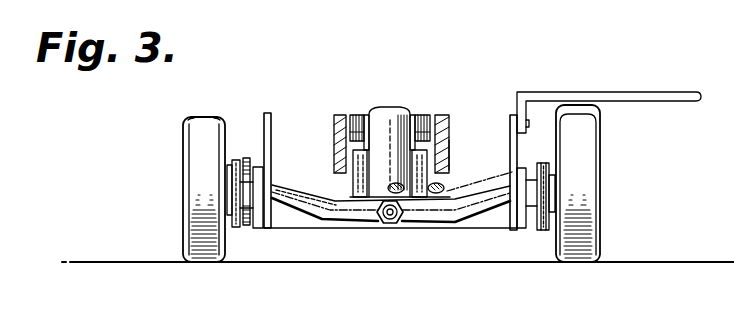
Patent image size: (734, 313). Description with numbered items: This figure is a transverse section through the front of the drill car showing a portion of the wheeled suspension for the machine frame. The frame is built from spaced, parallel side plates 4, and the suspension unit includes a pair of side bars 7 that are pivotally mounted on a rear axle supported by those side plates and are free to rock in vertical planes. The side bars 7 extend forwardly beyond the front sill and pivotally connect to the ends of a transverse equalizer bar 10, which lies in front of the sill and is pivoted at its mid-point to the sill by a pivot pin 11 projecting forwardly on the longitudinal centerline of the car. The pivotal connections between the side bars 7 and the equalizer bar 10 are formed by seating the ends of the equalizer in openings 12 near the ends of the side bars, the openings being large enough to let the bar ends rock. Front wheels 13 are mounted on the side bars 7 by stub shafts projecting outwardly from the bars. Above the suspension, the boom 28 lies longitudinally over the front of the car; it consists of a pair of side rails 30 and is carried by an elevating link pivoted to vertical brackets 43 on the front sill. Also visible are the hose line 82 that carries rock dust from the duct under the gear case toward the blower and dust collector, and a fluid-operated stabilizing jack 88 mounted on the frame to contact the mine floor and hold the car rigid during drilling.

The front wheels 13 is at (188, 178).
The side bars 7 is at (259, 167).
The side plates 4 is at (272, 129).
The openings 12 is at (262, 187).
The equalizer bar 10 is at (338, 213).
The pivot pin 11 is at (399, 221).
The hose line 82 is at (443, 188).
The side rails 30 is at (336, 158).
The vertical brackets 43 is at (357, 133).
The stabilizing jacks 88 is at (395, 122).
The boom 28 is at (455, 157).